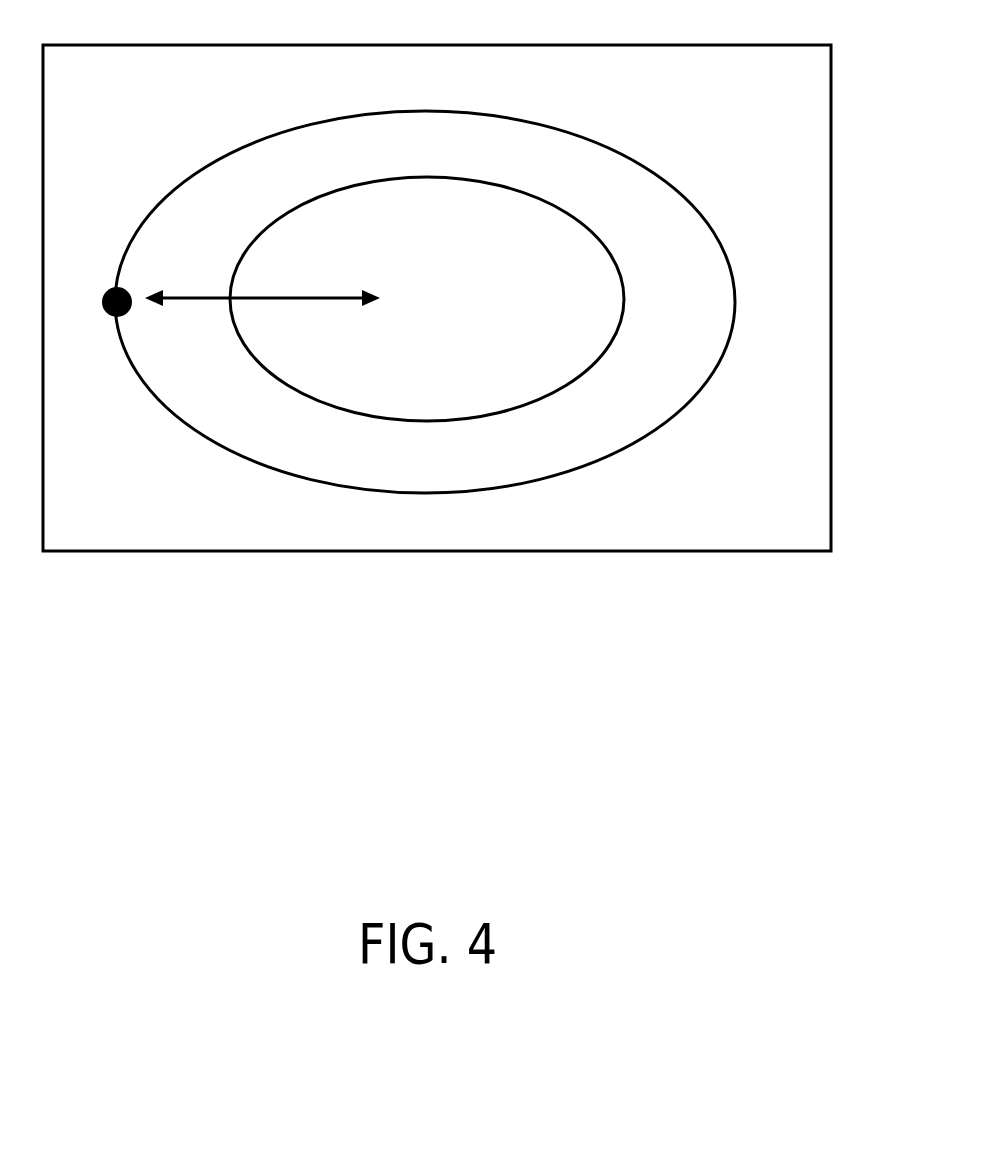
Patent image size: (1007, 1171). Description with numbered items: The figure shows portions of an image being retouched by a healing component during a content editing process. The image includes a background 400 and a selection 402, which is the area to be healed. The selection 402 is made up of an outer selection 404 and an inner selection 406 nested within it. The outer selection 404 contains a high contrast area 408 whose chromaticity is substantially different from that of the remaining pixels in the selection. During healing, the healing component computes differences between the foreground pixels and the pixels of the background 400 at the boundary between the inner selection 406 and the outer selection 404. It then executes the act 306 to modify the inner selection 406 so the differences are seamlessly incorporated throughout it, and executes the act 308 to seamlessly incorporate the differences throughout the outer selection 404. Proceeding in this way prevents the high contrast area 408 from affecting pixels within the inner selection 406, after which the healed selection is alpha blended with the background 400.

The background 400 is at (793, 551).
The selection 402 is at (605, 125).
The outer selection 404 is at (650, 437).
The inner selection 406 is at (577, 378).
The high contrast area 408 is at (122, 314).
The act 306 is at (305, 285).
The act 308 is at (187, 285).